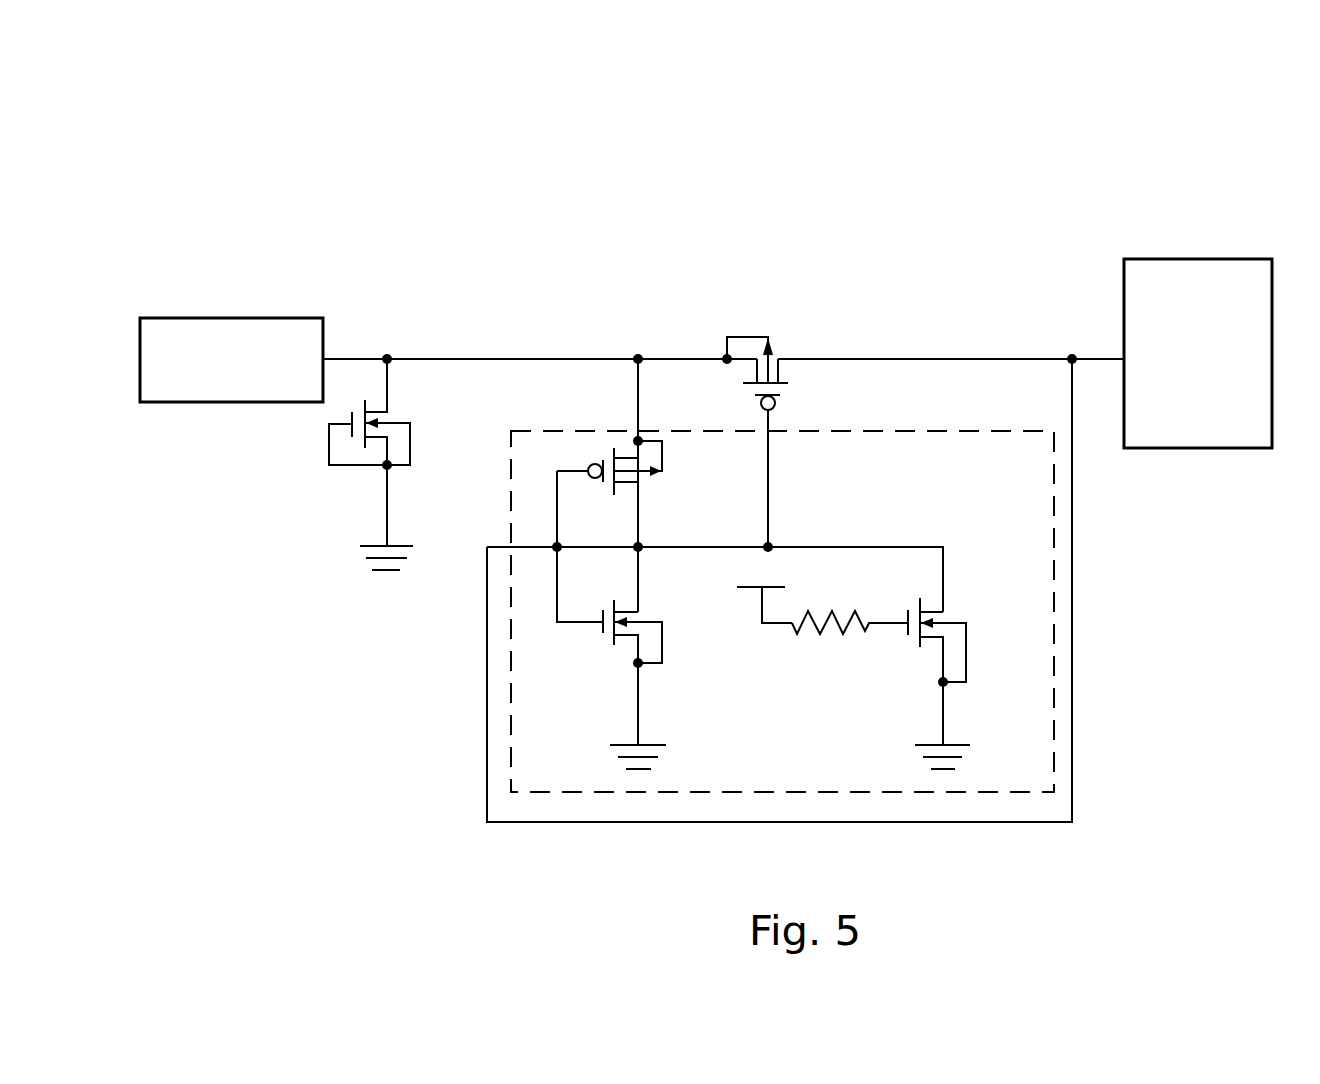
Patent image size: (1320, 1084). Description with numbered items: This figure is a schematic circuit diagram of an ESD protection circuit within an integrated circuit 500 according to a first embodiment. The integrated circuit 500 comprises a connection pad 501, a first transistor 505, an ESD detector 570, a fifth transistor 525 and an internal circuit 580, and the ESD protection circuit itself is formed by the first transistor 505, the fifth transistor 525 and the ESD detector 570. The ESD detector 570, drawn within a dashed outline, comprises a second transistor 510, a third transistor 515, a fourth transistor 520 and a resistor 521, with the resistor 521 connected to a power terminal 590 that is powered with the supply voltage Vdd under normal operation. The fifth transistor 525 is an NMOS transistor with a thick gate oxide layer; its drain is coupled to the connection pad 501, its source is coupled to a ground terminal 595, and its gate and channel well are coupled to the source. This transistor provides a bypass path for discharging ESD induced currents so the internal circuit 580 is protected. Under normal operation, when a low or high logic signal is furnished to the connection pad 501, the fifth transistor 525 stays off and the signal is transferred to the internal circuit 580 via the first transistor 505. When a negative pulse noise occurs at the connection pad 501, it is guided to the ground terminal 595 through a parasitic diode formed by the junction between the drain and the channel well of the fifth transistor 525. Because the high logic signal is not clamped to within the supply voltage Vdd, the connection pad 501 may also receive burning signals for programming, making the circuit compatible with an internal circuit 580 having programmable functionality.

The integrated circuit 500 is at (353, 143).
The connection pad 501 is at (218, 318).
The first transistor 505 is at (773, 358).
The second transistor 510 is at (640, 478).
The third transistor 515 is at (628, 617).
The fourth transistor 520 is at (935, 617).
The resistor 521 is at (800, 632).
The fifth transistor 525 is at (387, 418).
The ESD detector 570 is at (510, 500).
The internal circuit 580 is at (1195, 259).
The power terminal 590 is at (748, 590).
The ground terminal 595 is at (375, 546).